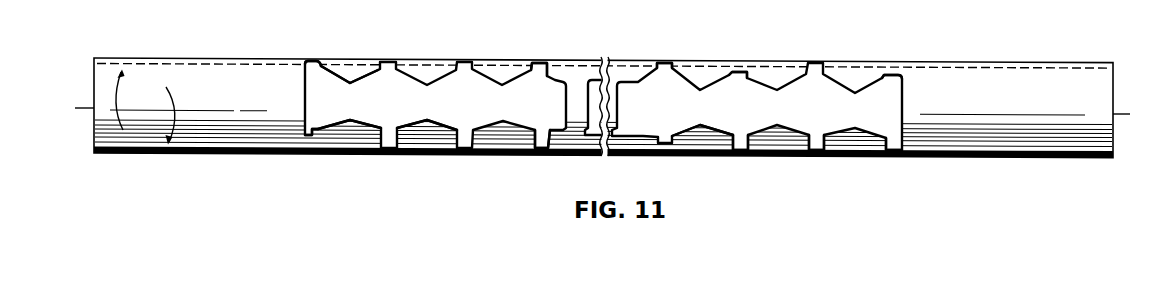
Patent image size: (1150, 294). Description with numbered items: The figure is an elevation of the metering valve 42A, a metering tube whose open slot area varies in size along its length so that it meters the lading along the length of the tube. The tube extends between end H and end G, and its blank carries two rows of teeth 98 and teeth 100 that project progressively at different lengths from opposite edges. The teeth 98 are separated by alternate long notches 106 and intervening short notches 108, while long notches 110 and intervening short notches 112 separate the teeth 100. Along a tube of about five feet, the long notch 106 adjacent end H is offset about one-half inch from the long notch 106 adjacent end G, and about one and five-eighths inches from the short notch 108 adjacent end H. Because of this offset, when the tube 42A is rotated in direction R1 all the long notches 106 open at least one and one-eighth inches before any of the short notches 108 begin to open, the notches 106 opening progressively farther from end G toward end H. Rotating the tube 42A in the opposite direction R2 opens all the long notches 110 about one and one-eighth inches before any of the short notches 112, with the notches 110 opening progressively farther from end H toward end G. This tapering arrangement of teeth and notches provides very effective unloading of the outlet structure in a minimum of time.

The metering valve 42A is at (955, 57).
The teeth 98 is at (348, 84).
The teeth 100 is at (350, 119).
The long notches 106 is at (304, 87).
The short notches 108 is at (742, 78).
The long notches 110 is at (538, 146).
The short notches 112 is at (304, 126).
The direction of rotation R1 is at (125, 110).
The direction of rotation R2 is at (166, 106).
The end H is at (77, 109).
The end G is at (1130, 115).